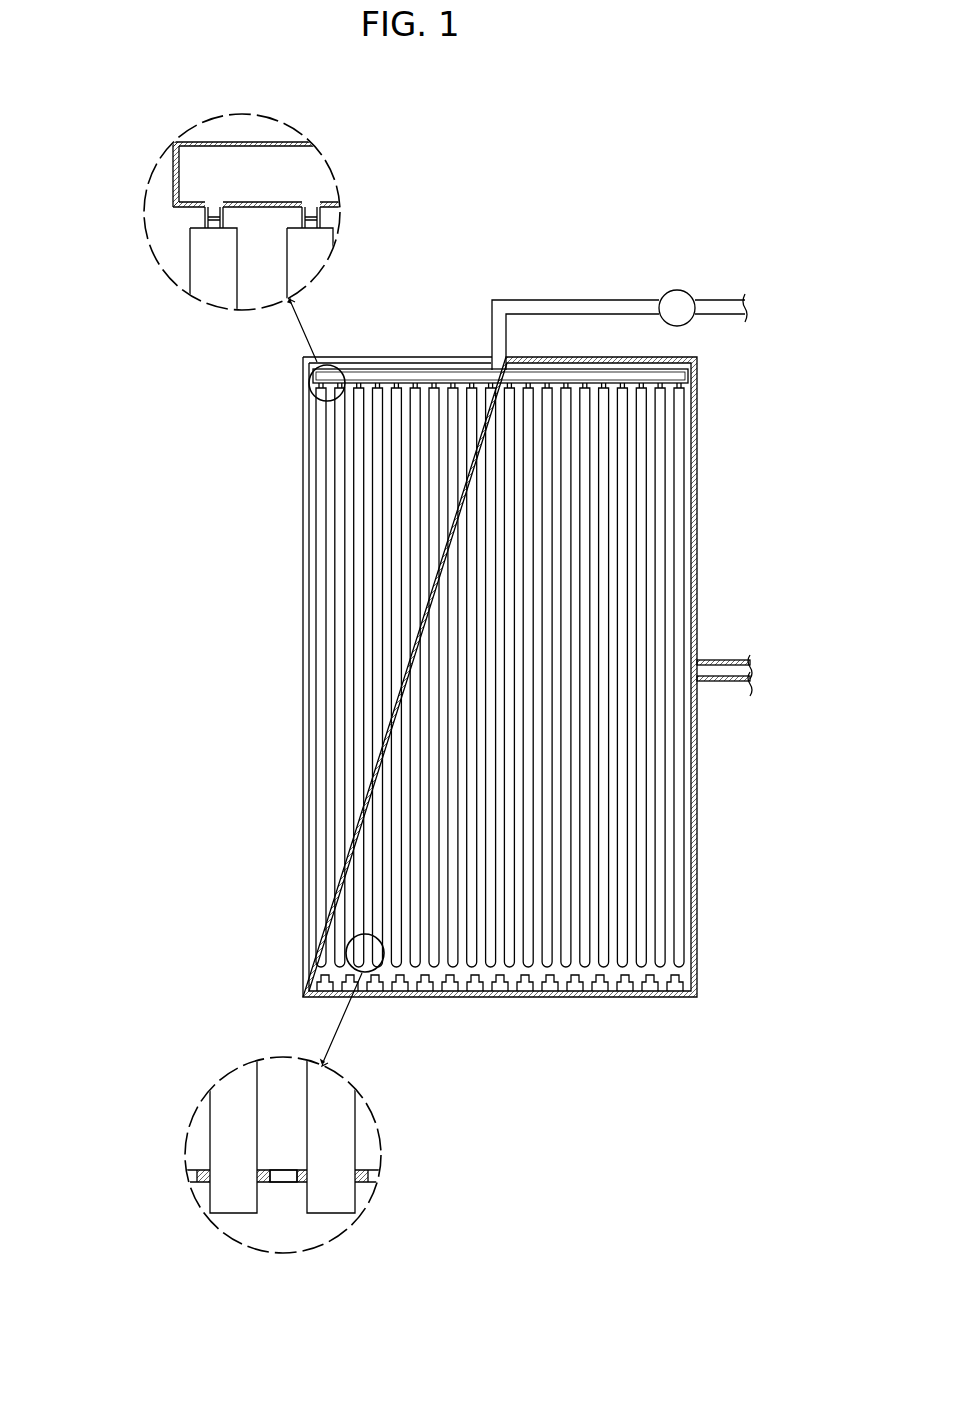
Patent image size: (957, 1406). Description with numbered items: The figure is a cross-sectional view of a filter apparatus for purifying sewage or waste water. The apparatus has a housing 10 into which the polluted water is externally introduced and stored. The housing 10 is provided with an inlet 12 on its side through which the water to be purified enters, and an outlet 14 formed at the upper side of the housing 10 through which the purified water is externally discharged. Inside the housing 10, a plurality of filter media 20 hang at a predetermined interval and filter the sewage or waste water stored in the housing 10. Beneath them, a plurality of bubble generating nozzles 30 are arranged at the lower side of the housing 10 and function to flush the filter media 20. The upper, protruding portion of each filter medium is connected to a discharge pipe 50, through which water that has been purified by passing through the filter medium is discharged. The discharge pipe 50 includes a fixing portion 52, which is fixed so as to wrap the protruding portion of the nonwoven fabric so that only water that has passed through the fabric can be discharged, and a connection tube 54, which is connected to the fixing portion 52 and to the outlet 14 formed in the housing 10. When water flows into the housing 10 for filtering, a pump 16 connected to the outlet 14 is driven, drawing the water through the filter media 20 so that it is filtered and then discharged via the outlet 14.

The housing 10 is at (303, 672).
The inlet 12 is at (720, 660).
The outlet 14 is at (575, 300).
The pump 16 is at (678, 290).
The filter media 20 is at (318, 742).
The bubble generating nozzles 30 is at (318, 984).
The discharge pipe 50 is at (206, 231).
The fixing portion 52 is at (206, 218).
The connection tube 54 is at (173, 183).